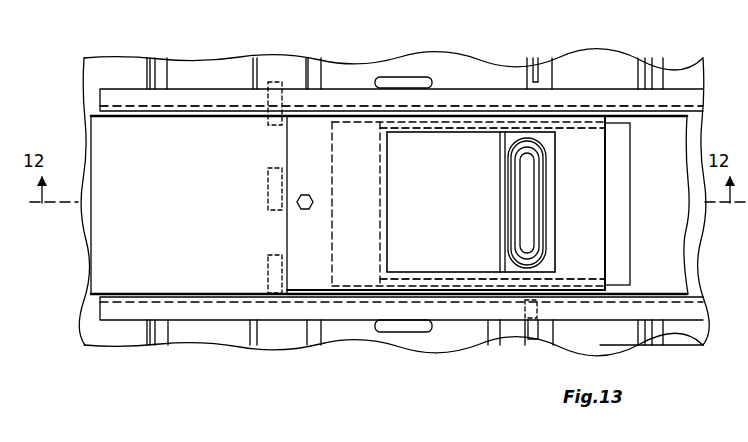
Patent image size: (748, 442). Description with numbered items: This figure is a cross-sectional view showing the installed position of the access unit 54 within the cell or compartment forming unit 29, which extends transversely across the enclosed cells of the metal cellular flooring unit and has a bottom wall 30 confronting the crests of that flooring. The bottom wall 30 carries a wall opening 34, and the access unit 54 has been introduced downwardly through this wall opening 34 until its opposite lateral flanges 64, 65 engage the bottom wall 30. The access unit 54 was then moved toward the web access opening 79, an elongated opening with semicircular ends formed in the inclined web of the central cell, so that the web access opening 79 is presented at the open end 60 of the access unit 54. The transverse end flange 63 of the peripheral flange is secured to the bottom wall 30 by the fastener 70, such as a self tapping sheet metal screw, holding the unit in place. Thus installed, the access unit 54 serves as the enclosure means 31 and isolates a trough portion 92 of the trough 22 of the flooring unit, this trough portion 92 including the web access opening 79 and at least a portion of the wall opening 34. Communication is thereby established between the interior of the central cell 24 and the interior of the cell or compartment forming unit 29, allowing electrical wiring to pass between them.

The trough 22 is at (345, 327).
The central cell 24 is at (678, 350).
The cell or compartment forming unit 29 is at (668, 84).
The bottom wall 30 is at (170, 173).
The enclosure means 31 is at (347, 104).
The wall opening 34 is at (622, 260).
The access unit 54 is at (285, 234).
The open end 60 is at (547, 168).
The transverse end flange 63 is at (307, 148).
The lateral flange 64 is at (452, 283).
The lateral flange 65 is at (470, 124).
The fastener 70 is at (297, 202).
The web access opening 79 is at (525, 223).
The trough portion 92 is at (433, 163).